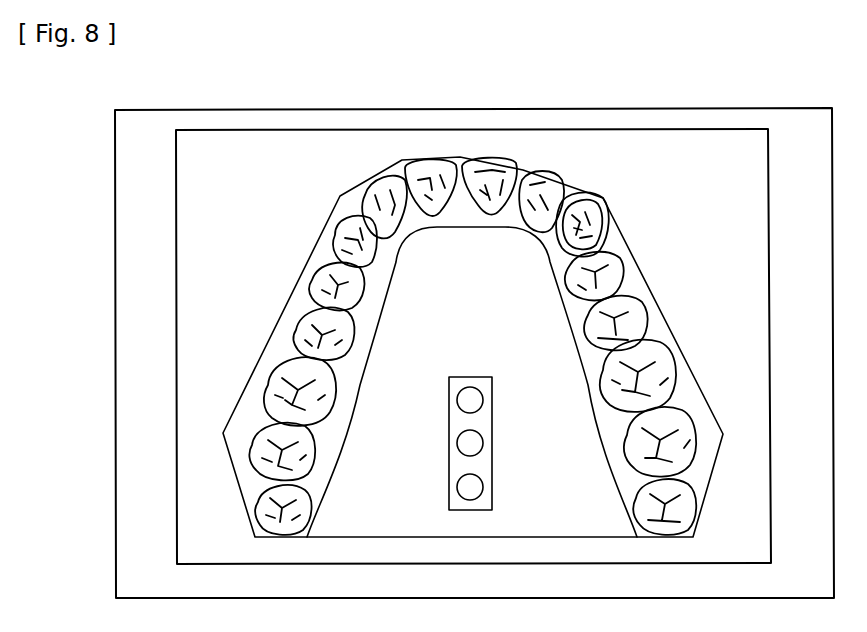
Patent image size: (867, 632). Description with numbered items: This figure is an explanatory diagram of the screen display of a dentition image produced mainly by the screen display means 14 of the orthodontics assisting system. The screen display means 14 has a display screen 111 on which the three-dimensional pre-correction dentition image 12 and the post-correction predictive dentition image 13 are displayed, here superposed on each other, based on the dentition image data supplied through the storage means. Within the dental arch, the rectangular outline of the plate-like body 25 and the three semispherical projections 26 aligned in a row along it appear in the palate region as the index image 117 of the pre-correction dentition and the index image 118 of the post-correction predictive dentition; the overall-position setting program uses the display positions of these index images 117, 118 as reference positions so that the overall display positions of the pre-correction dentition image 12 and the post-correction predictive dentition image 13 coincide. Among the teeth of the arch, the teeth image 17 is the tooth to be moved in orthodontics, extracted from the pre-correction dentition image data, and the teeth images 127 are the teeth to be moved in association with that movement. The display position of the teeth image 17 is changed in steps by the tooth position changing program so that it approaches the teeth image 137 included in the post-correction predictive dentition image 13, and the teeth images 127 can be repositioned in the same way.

The screen display means 14 is at (115, 210).
The display screen 111 is at (128, 358).
The pre-correction dentition image 12 is at (466, 340).
The post-correction predictive dentition image 13 is at (453, 347).
The teeth image 127 is at (562, 176).
The teeth image 137 is at (600, 212).
The teeth image 17 is at (614, 222).
The index image 117 is at (508, 453).
The index image 118 is at (508, 453).
The semispherical projection 26 is at (477, 487).
The plate-like body 25 is at (488, 505).